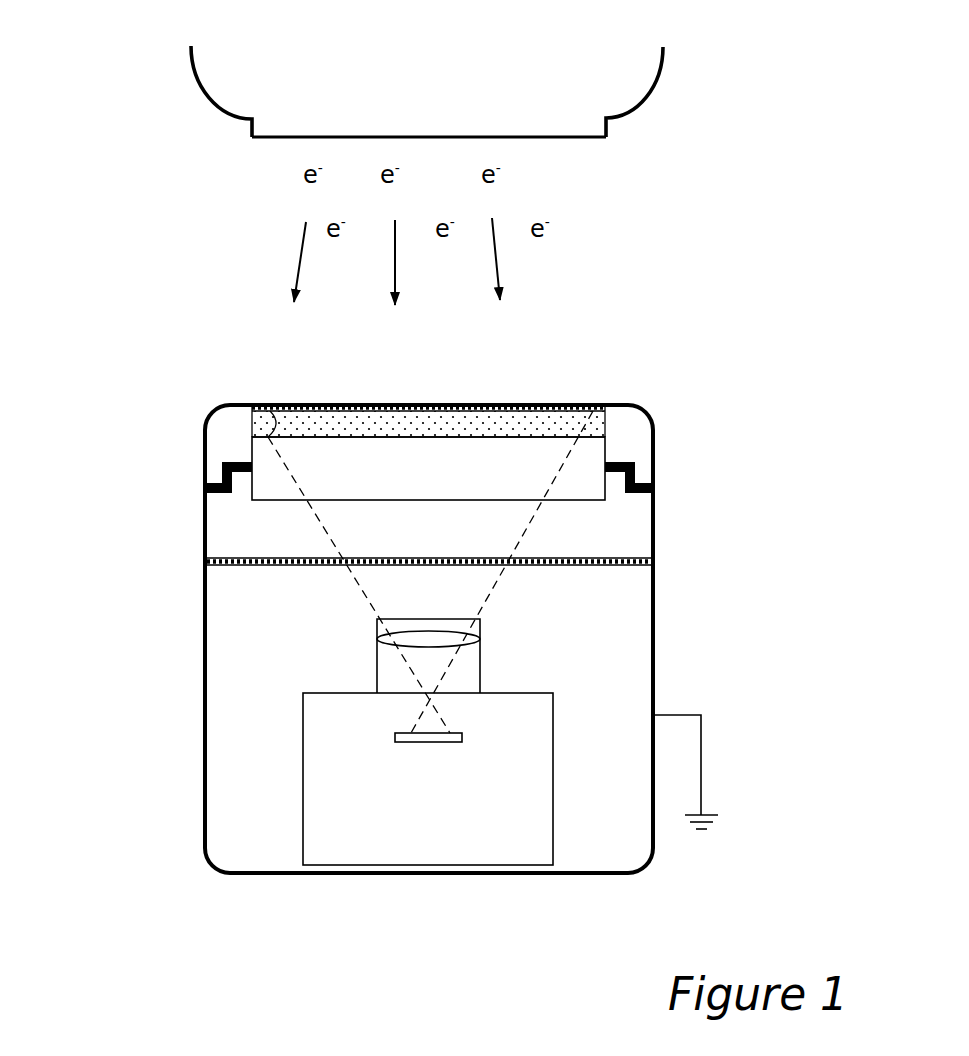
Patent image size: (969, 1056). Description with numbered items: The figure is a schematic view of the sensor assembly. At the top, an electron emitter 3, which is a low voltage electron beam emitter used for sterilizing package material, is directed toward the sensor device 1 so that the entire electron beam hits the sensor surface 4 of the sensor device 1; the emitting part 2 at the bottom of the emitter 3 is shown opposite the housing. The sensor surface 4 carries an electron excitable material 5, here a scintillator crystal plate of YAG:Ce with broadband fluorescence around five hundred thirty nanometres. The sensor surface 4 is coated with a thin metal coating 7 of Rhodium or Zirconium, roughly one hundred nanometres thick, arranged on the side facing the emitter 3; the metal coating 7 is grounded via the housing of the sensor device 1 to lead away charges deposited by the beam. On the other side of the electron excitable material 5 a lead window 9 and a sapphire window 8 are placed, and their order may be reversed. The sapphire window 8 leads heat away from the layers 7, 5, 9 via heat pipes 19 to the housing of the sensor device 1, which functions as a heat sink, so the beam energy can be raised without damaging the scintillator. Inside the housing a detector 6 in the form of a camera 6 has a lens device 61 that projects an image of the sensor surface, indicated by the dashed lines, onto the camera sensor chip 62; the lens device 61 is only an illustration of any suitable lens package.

The sensor device 1 is at (443, 583).
The electron emitting plate 2 is at (579, 137).
The electron emitter 3 is at (369, 128).
The sensor surface 4 is at (250, 437).
The electron excitable material 5 is at (317, 422).
The detector 6 is at (520, 842).
The metal coating 7 is at (583, 405).
The sapphire window 8 is at (588, 482).
The lead window 9 is at (232, 563).
The heat pipes 19 is at (632, 492).
The lens device 61 is at (428, 640).
The camera sensor chip 62 is at (418, 742).